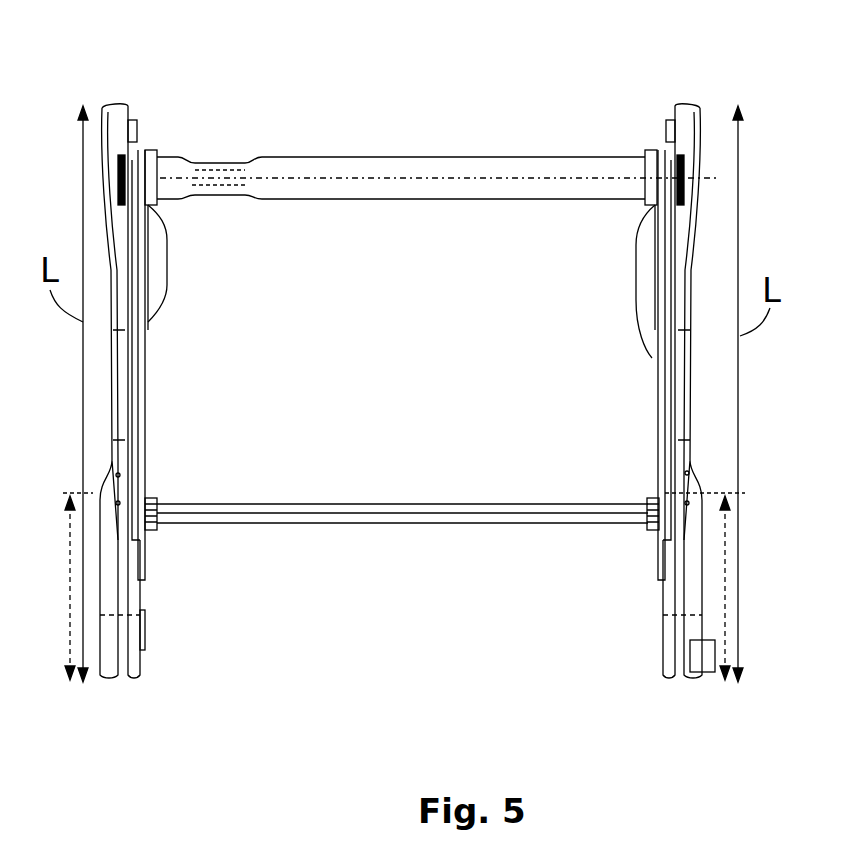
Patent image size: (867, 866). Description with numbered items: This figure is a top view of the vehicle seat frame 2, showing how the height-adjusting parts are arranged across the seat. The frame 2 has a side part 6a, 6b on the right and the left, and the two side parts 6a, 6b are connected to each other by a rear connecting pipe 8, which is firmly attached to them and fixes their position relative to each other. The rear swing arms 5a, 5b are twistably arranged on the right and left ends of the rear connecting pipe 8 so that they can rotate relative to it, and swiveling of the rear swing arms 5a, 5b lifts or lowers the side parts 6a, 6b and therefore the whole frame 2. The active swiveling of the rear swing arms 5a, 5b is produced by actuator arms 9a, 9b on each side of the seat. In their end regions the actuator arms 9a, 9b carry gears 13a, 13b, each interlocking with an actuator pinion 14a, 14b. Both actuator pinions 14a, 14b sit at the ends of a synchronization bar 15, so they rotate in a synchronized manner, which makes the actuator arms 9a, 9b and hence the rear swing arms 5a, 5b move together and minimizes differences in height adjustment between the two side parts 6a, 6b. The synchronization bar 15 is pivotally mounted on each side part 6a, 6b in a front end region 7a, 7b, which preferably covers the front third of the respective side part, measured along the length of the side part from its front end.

The frame 2 is at (316, 93).
The rear swing arm 5a is at (655, 262).
The rear swing arm 5b is at (140, 254).
The side part 6a is at (686, 130).
The side part 6b is at (114, 128).
The front end region 7a is at (727, 586).
The front end region 7b is at (68, 572).
The rear connecting pipe 8 is at (447, 168).
The actuator arm 9a is at (650, 358).
The actuator arm 9b is at (143, 352).
The gear 13a is at (654, 539).
The gear 13b is at (155, 540).
The actuator pinion 14a is at (652, 500).
The actuator pinion 14b is at (150, 500).
The synchronization bar 15 is at (345, 523).